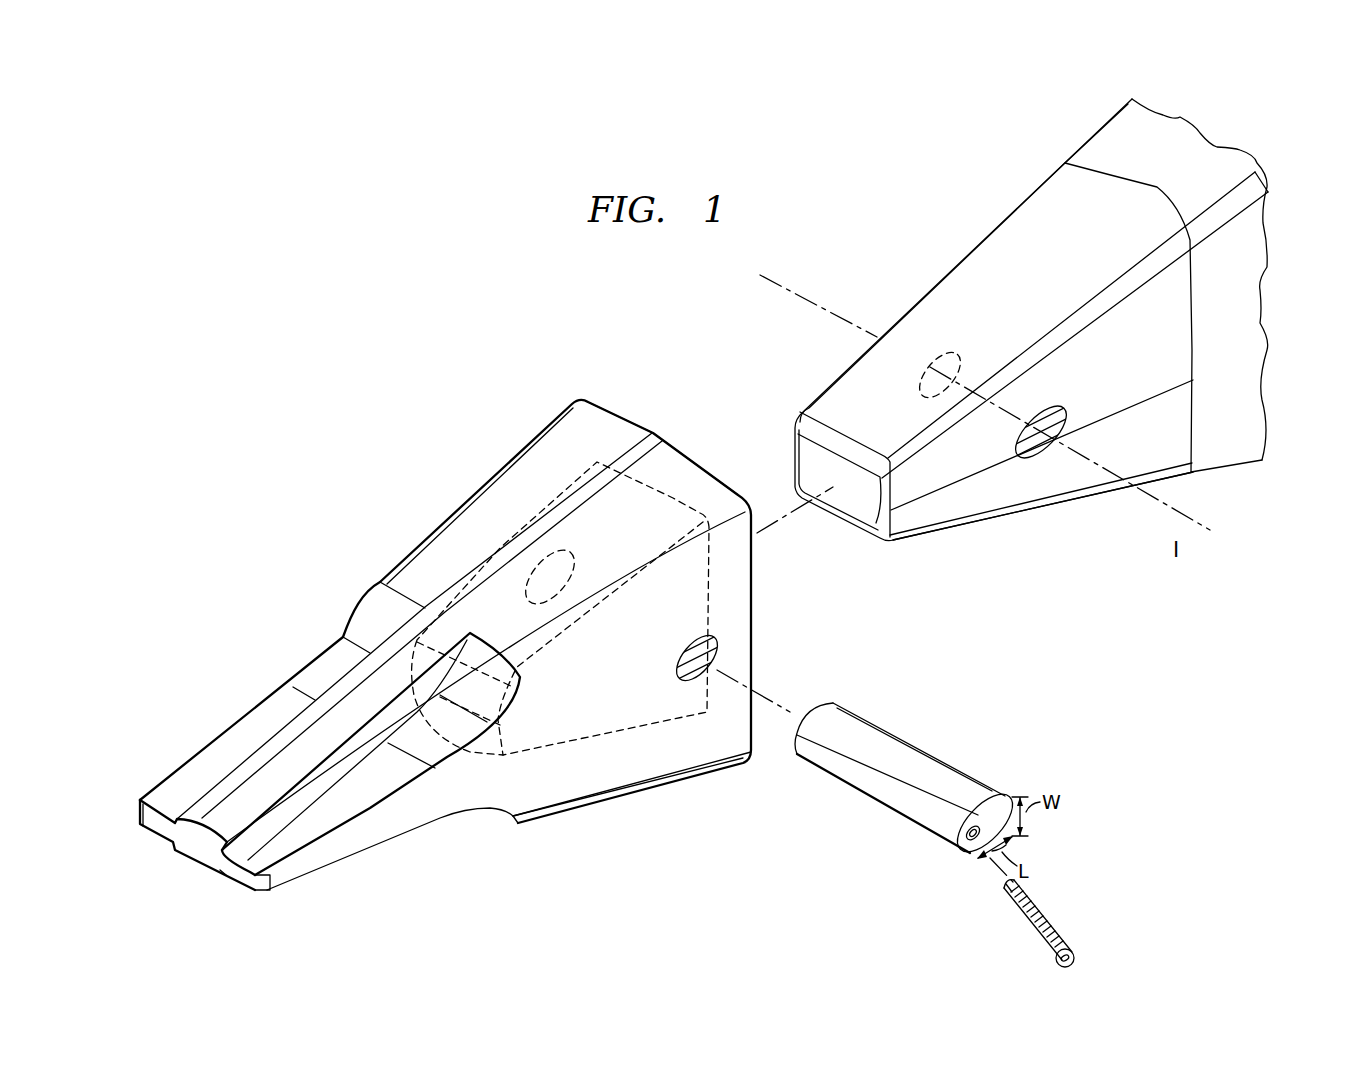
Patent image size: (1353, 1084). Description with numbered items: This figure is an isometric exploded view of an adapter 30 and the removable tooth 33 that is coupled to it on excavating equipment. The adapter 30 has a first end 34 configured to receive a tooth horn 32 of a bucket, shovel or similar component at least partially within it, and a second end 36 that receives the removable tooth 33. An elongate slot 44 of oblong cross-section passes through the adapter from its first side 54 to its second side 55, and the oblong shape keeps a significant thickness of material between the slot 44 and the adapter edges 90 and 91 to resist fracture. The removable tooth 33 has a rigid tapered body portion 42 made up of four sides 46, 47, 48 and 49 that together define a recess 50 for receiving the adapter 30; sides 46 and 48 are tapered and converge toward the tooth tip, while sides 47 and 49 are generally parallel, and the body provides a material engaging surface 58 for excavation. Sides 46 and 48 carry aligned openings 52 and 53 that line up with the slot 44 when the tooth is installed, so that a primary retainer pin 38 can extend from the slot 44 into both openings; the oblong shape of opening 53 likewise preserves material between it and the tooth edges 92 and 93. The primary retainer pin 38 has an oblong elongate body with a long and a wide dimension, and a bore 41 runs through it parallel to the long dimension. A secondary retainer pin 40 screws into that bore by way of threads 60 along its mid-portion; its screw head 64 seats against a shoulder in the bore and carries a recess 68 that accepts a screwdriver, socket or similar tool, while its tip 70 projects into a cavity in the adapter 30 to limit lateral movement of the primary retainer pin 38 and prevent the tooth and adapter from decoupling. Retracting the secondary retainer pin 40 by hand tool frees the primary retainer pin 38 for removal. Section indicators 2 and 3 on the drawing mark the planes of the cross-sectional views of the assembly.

The adapter 30 is at (885, 245).
The tooth horn 32 is at (1200, 145).
The removable tooth 33 is at (562, 836).
The first end 34 is at (1092, 240).
The second end 36 is at (890, 420).
The primary retainer pin 38 is at (910, 757).
The secondary retainer pin 40 is at (1043, 927).
The bore 41 is at (978, 825).
The tapered body portion 42 is at (376, 558).
The elongate slot 44 is at (1060, 422).
The side 46 is at (630, 770).
The side 47 is at (625, 422).
The side 48 is at (520, 487).
The side 49 is at (468, 822).
The recess 50 is at (680, 480).
The opening 52 is at (574, 556).
The opening 53 is at (680, 672).
The first side 54 is at (1174, 317).
The second side 55 is at (1010, 255).
The material engaging surface 58 is at (247, 878).
The threads 60 is at (1048, 928).
The screw head 64 is at (1055, 958).
The recess 68 is at (1075, 960).
The tip 70 is at (1012, 893).
The edge 90 is at (1100, 315).
The edge 91 is at (1040, 507).
The edge 92 is at (632, 605).
The edge 93 is at (712, 765).
The section line 2 is at (166, 872).
The section line 3 is at (441, 499).